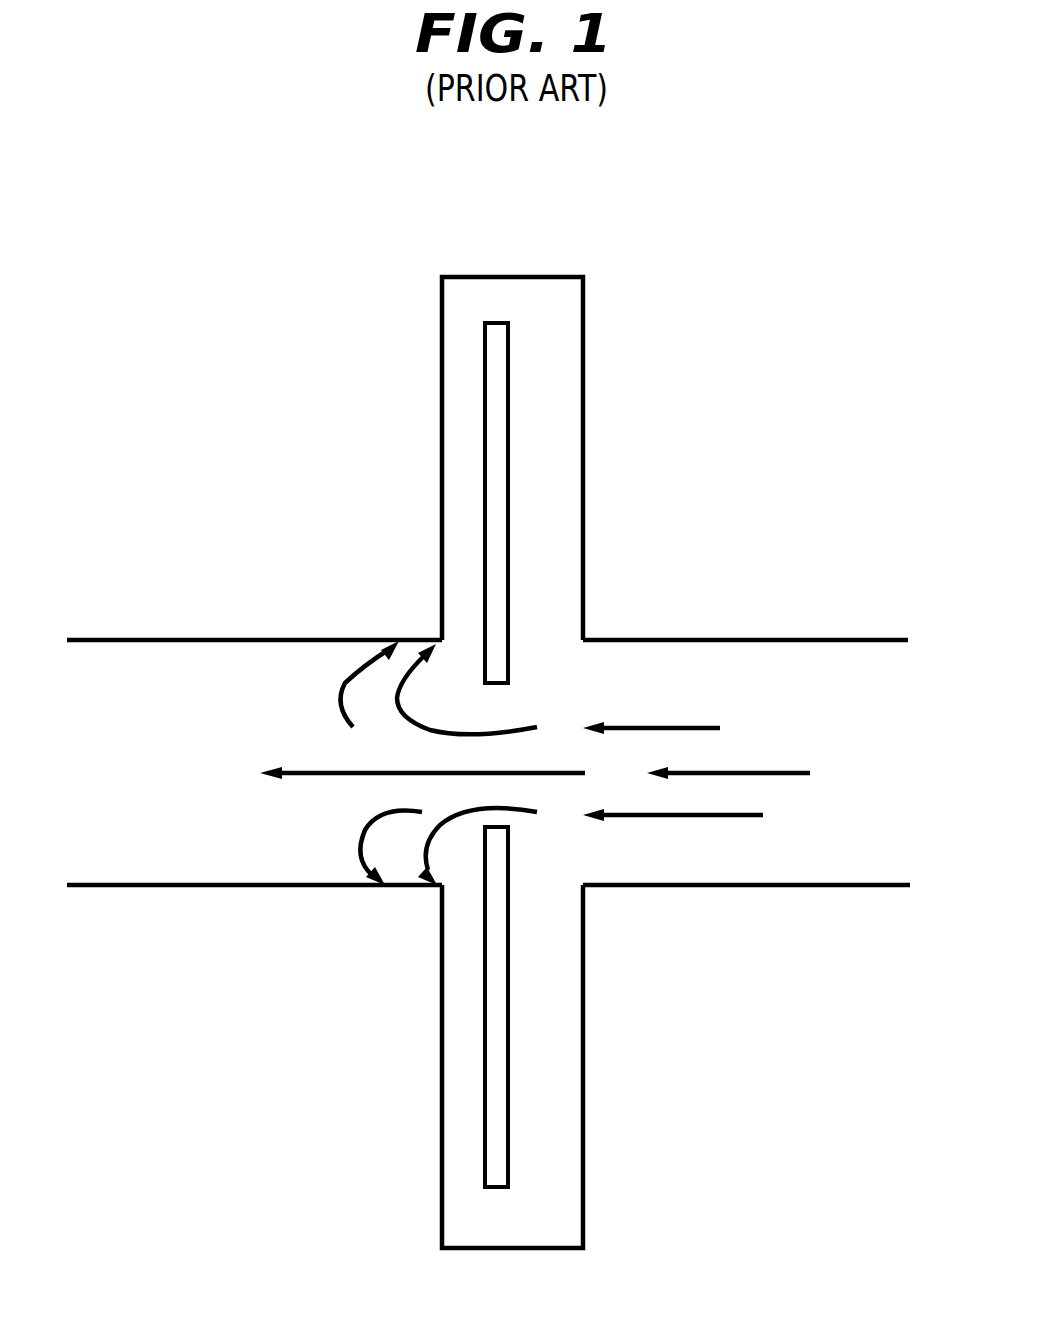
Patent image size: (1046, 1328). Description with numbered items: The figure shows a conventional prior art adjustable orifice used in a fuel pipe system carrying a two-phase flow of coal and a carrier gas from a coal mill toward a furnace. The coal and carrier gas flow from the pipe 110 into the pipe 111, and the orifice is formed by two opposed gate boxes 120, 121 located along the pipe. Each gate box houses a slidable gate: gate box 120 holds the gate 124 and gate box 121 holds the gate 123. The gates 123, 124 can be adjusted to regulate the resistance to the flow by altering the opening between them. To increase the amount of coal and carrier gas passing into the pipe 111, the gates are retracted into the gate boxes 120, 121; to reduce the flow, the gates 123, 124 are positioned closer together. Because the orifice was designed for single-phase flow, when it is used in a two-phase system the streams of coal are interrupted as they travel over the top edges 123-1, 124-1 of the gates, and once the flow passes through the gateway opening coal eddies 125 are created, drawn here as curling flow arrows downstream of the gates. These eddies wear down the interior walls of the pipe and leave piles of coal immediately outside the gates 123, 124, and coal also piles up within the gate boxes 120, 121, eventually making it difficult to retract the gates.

The pipe 110 is at (770, 638).
The pipe 111 is at (118, 638).
The gate box 120 is at (583, 418).
The gate box 121 is at (583, 968).
The slidable gate 123 is at (508, 1062).
The top edge of gate 123-1 is at (508, 828).
The slidable gate 124 is at (508, 356).
The top edge of gate 124-1 is at (508, 681).
The coal eddies 125 is at (348, 672).